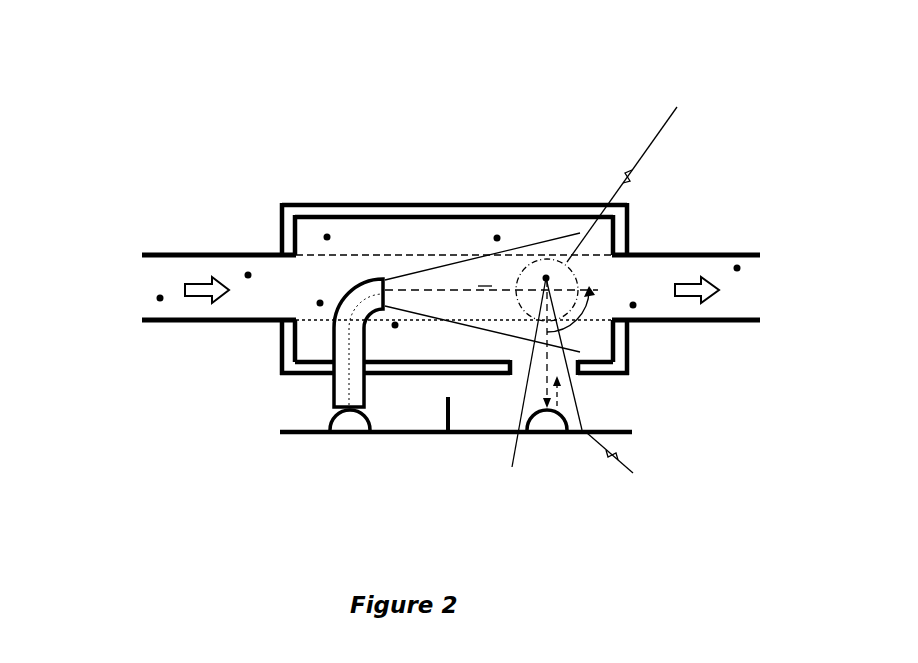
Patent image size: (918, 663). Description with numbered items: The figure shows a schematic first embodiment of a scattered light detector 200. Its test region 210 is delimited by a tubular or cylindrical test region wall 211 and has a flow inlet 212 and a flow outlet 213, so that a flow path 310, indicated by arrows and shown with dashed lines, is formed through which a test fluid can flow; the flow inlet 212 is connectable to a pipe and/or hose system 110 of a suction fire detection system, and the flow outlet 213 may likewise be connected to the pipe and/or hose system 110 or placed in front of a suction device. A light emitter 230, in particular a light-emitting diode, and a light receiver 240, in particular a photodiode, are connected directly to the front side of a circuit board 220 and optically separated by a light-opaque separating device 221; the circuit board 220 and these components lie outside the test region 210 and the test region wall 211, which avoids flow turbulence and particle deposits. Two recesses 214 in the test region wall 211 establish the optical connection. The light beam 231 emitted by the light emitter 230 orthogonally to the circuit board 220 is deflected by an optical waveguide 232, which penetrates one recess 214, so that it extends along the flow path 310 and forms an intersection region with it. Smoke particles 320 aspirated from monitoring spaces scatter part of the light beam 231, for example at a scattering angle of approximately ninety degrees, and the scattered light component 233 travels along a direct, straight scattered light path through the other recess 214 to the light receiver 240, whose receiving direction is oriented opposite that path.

The scattered light detector 200 is at (577, 122).
The pipe and/or hose system 110 is at (141, 253).
The flow path 310 is at (212, 283).
The test region 210 is at (408, 244).
The test region wall 211 is at (457, 207).
The flow inlet 212 is at (285, 301).
The flow outlet 213 is at (659, 294).
The recesses 214 is at (300, 375).
The circuit board 220 is at (405, 433).
The light-opaque separating device 221 is at (458, 435).
The light emitter 230 is at (327, 430).
The light beam 231 is at (438, 267).
The optical waveguide 232 is at (348, 285).
The scattered light component 233 is at (572, 403).
The light receiver 240 is at (518, 387).
The smoke particles 320 is at (546, 278).